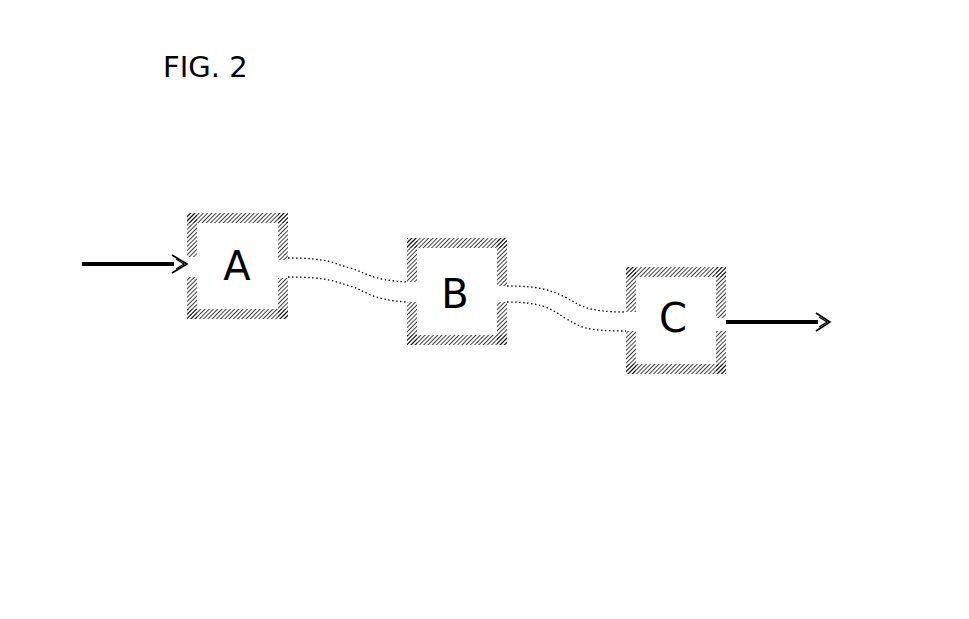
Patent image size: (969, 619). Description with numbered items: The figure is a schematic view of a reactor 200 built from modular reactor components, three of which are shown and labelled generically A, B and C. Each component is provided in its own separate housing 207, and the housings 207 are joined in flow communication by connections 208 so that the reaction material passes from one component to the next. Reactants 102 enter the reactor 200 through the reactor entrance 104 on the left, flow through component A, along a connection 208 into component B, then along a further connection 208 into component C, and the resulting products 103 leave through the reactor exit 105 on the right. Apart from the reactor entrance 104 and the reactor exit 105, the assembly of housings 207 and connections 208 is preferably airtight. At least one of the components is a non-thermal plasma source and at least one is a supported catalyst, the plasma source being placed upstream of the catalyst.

The reactants 102 is at (100, 272).
The products 103 is at (808, 325).
The reactor entrance 104 is at (187, 270).
The reactor exit 105 is at (726, 325).
The reactor 200 is at (548, 152).
The housings 207 is at (658, 347).
The connections 208 is at (563, 299).